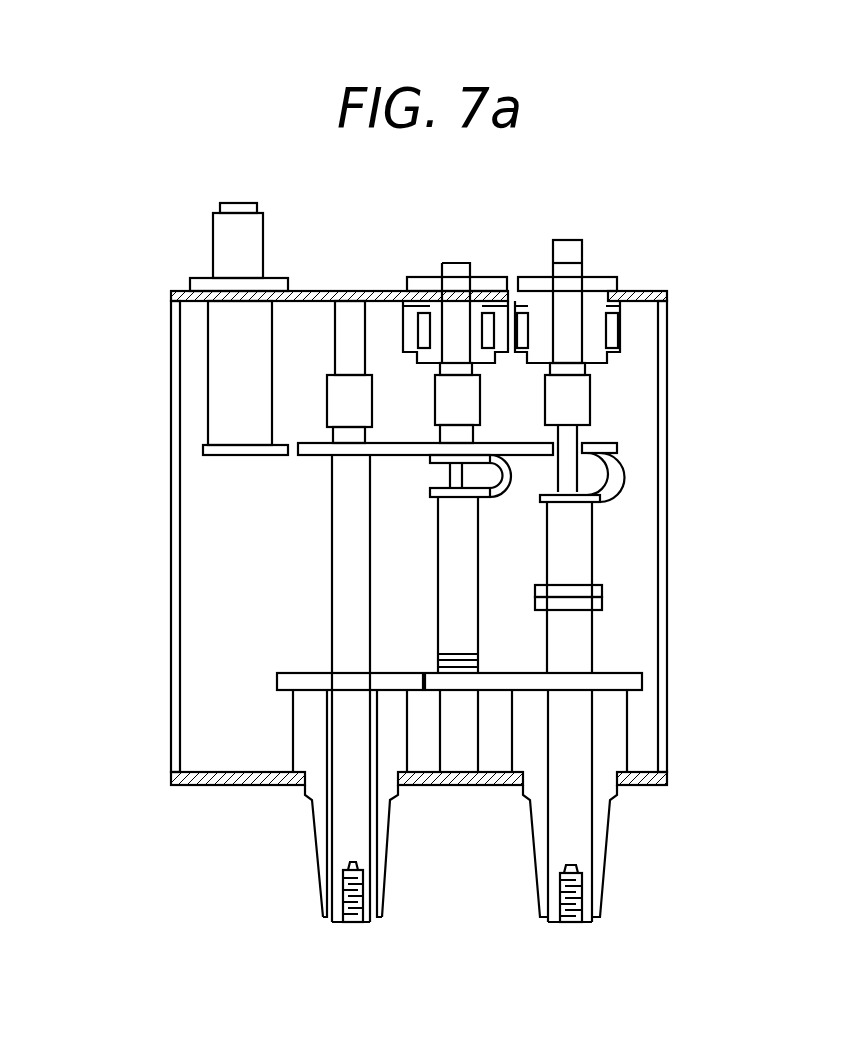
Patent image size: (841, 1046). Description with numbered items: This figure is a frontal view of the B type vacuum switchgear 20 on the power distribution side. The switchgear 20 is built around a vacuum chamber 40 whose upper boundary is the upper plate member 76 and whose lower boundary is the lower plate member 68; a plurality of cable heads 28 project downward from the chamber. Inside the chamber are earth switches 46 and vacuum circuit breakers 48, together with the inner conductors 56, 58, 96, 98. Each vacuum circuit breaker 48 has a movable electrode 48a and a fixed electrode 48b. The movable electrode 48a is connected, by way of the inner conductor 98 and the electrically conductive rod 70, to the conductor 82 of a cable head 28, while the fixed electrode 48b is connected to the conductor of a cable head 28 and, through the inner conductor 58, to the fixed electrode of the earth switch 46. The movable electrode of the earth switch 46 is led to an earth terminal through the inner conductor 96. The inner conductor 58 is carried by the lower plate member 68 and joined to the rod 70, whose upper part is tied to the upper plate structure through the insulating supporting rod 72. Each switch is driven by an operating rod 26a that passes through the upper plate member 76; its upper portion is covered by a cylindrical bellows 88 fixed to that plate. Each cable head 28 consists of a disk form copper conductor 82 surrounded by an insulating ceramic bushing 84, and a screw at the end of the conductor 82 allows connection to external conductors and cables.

The vacuum switchgear 20 is at (527, 193).
The operating rod 26a is at (572, 285).
The cable head 28 is at (407, 848).
The vacuum chamber 40 is at (154, 611).
The earth switch 46 is at (416, 653).
The vacuum circuit breaker 48 is at (648, 589).
The movable electrode 48a is at (565, 592).
The fixed electrode 48b is at (595, 605).
The inner conductor 56 is at (297, 677).
The inner conductor 58 is at (640, 683).
The lower plate member 68 is at (235, 787).
The electrically conductive rod 70 is at (343, 522).
The insulating supporting rod 72 is at (582, 395).
The upper plate member 76 is at (340, 291).
The disk form copper conductor 82 is at (558, 830).
The insulating ceramic bushing 84 is at (323, 850).
The cylindrical bellows 88 is at (620, 323).
The inner conductor 96 is at (213, 455).
The inner conductor 98 is at (600, 447).